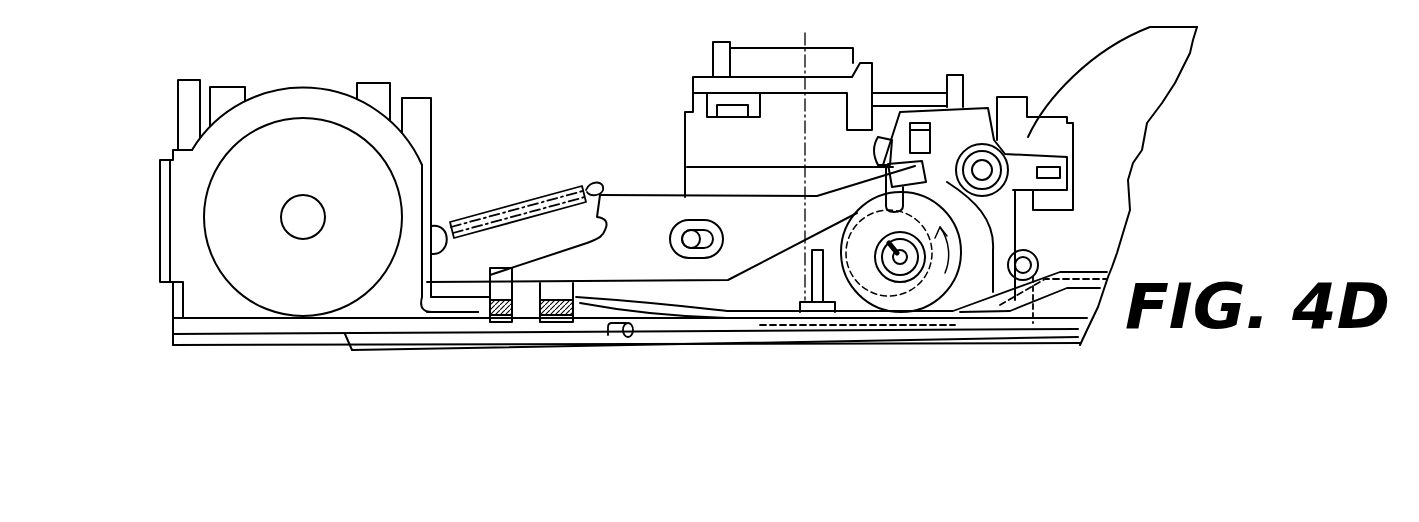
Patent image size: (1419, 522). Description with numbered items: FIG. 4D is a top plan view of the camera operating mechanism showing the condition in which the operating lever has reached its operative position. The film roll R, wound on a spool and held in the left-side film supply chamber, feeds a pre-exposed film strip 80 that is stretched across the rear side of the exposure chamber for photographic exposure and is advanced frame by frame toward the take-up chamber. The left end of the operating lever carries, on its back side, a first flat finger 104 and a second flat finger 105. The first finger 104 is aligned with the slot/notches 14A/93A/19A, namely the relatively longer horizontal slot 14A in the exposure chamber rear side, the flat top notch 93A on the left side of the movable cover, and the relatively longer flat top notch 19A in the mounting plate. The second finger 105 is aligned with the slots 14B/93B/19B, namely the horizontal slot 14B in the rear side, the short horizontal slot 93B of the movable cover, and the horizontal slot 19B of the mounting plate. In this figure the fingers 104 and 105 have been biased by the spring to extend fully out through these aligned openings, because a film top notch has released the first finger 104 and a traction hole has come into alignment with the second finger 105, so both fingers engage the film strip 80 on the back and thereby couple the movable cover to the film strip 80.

The film roll R is at (287, 148).
The second flat finger 105 is at (501, 290).
The first flat finger 104 is at (548, 290).
The film strip 80 is at (372, 318).
The horizontal slot 14B is at (477, 313).
The short horizontal slot 93B is at (462, 366).
The horizontal slot 19B is at (522, 366).
The horizontal slot 14A is at (590, 313).
The flat top notch 93A is at (843, 328).
The flat top notch 19A is at (678, 351).